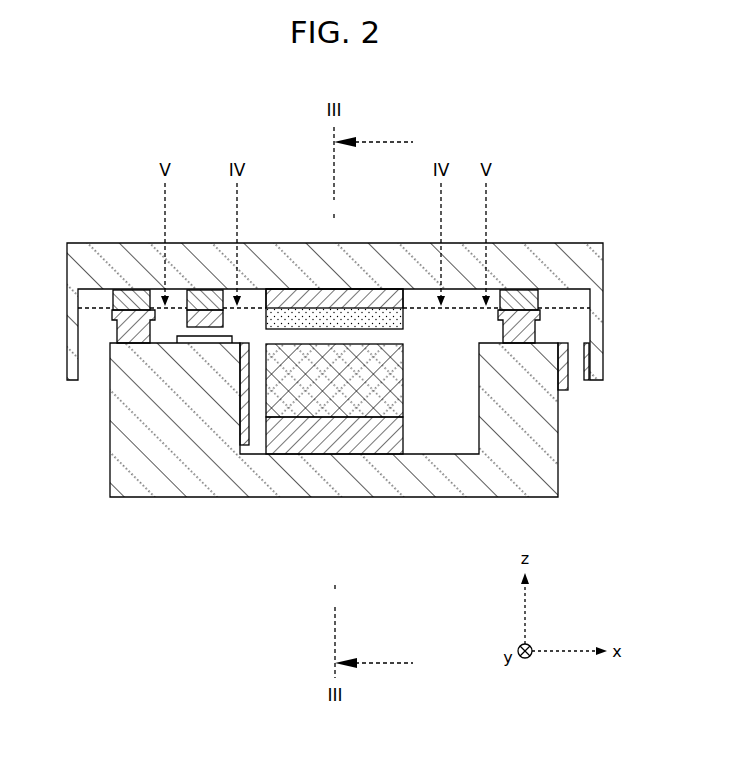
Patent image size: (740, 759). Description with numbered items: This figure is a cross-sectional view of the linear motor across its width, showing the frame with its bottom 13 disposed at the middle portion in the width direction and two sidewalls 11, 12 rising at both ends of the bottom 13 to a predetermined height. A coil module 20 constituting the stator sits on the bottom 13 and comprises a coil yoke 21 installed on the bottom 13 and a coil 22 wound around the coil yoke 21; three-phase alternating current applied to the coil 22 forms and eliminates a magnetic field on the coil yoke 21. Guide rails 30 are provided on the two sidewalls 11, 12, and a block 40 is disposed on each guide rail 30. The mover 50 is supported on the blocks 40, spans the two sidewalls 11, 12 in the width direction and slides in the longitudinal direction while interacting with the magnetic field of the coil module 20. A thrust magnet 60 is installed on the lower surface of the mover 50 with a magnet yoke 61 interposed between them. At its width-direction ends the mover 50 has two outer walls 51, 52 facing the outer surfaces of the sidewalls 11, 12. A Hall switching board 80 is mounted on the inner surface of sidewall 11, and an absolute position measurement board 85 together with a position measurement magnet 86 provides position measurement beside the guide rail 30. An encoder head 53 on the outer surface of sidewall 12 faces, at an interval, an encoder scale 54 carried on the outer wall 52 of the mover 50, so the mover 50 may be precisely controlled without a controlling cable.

The sidewall 11 is at (116, 401).
The sidewall 12 is at (560, 452).
The bottom 13 is at (303, 480).
The coil module 20 is at (334, 463).
The coil yoke 21 is at (381, 444).
The coil 22 is at (342, 406).
The guide rail 30 is at (118, 331).
The block 40 is at (114, 298).
The mover 50 is at (523, 238).
The outer wall 51 is at (71, 367).
The outer wall 52 is at (598, 311).
The encoder head 53 is at (566, 392).
The encoder scale 54 is at (588, 382).
The thrust magnet 60 is at (334, 264).
The magnet yoke 61 is at (300, 300).
The Hall switching board 80 is at (244, 432).
The absolute position measurement board 85 is at (224, 336).
The position measurement magnet 86 is at (198, 297).